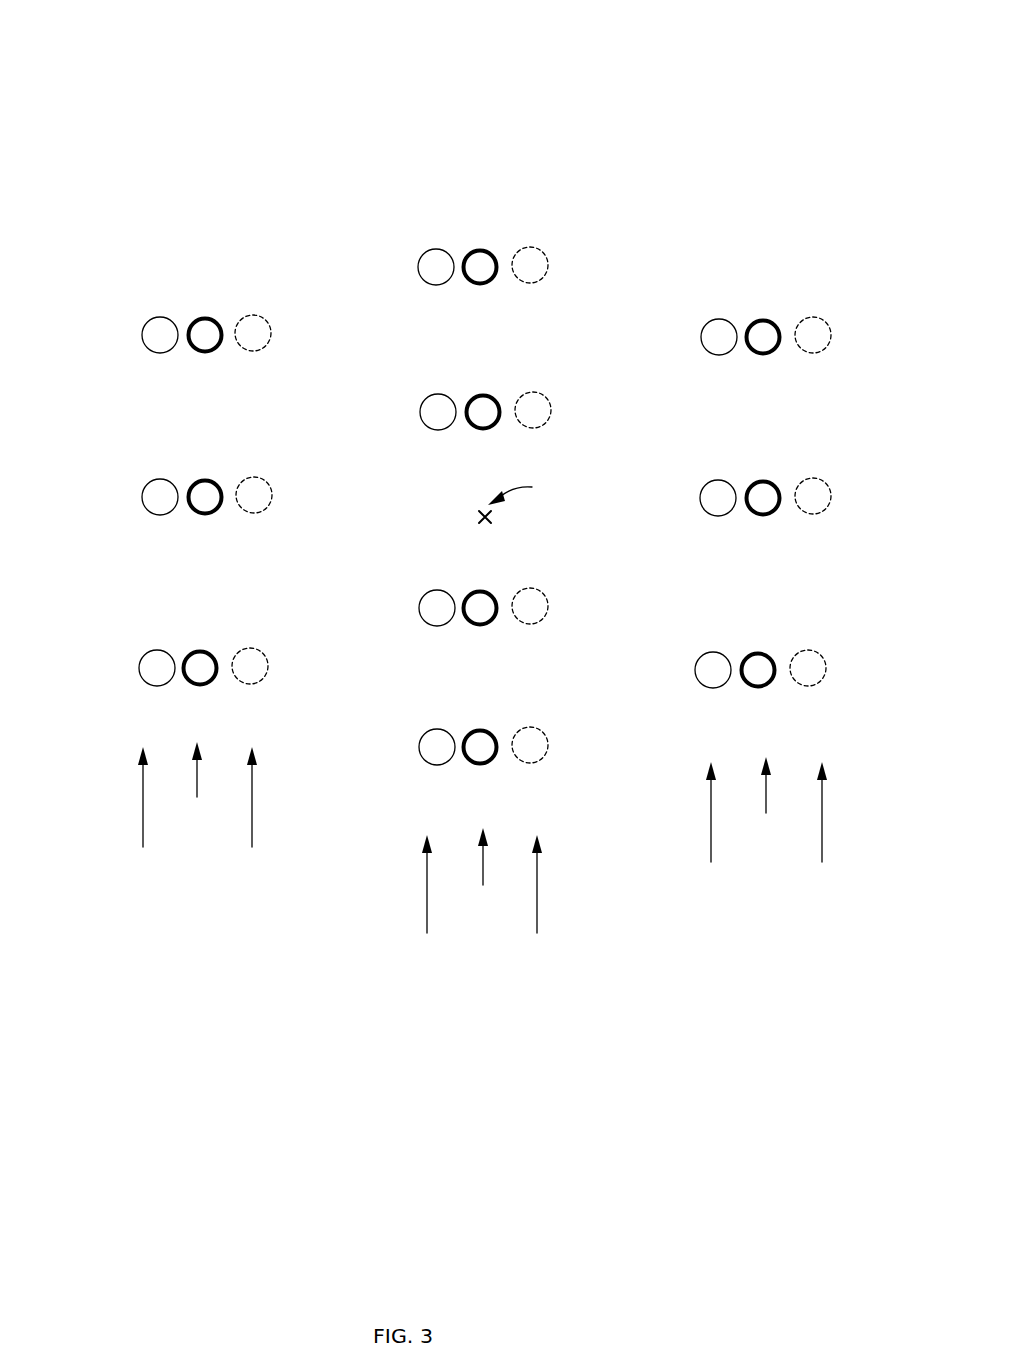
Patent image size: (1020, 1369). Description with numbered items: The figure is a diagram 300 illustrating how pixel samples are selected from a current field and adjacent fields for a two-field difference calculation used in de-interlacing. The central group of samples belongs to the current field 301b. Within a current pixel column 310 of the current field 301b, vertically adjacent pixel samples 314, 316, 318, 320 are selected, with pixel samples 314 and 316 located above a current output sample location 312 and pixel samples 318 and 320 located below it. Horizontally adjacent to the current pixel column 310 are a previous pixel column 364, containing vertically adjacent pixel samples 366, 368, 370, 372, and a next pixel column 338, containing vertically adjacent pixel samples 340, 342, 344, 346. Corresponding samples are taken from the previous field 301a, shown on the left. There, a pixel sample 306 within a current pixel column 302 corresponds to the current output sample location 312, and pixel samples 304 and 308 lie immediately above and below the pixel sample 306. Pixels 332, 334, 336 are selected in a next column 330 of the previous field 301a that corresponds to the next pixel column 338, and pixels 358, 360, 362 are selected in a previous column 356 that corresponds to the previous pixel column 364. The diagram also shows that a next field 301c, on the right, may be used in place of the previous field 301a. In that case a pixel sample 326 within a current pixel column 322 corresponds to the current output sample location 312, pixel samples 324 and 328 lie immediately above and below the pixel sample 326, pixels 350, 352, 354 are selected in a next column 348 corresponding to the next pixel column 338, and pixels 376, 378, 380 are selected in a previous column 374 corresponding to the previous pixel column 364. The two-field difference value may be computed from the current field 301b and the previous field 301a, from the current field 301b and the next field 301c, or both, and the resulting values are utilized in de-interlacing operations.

The sample diagram 300 is at (148, 126).
The previous field 301a is at (148, 278).
The current field 301b is at (428, 218).
The next field 301c is at (726, 276).
The current pixel column 302 is at (192, 852).
The pixel sample 304 is at (205, 353).
The pixel sample 306 is at (205, 515).
The pixel sample 308 is at (200, 686).
The current pixel column 310 is at (477, 940).
The current output sample location 312 is at (492, 532).
The pixel sample 314 is at (480, 285).
The pixel sample 316 is at (483, 430).
The pixel sample 318 is at (480, 626).
The pixel sample 320 is at (480, 765).
The current pixel column 322 is at (762, 867).
The pixel sample 324 is at (763, 355).
The pixel sample 326 is at (763, 516).
The pixel sample 328 is at (758, 688).
The next pixel column 330 is at (252, 898).
The pixel 332 is at (253, 351).
The pixel 334 is at (254, 513).
The pixel 336 is at (250, 684).
The next pixel column 338 is at (535, 988).
The pixel sample 340 is at (530, 283).
The pixel sample 342 is at (533, 428).
The pixel sample 344 is at (530, 624).
The pixel sample 346 is at (530, 763).
The next pixel column 348 is at (818, 915).
The pixel 350 is at (813, 353).
The pixel 352 is at (813, 514).
The pixel 354 is at (808, 686).
The previous pixel column 356 is at (118, 897).
The pixel 358 is at (160, 353).
The pixel 360 is at (160, 515).
The pixel 362 is at (157, 686).
The previous pixel column 364 is at (403, 987).
The pixel sample 366 is at (436, 285).
The pixel sample 368 is at (438, 430).
The pixel sample 370 is at (437, 626).
The pixel sample 372 is at (437, 765).
The previous pixel column 374 is at (688, 912).
The pixel 376 is at (719, 355).
The pixel 378 is at (718, 516).
The pixel 380 is at (713, 688).